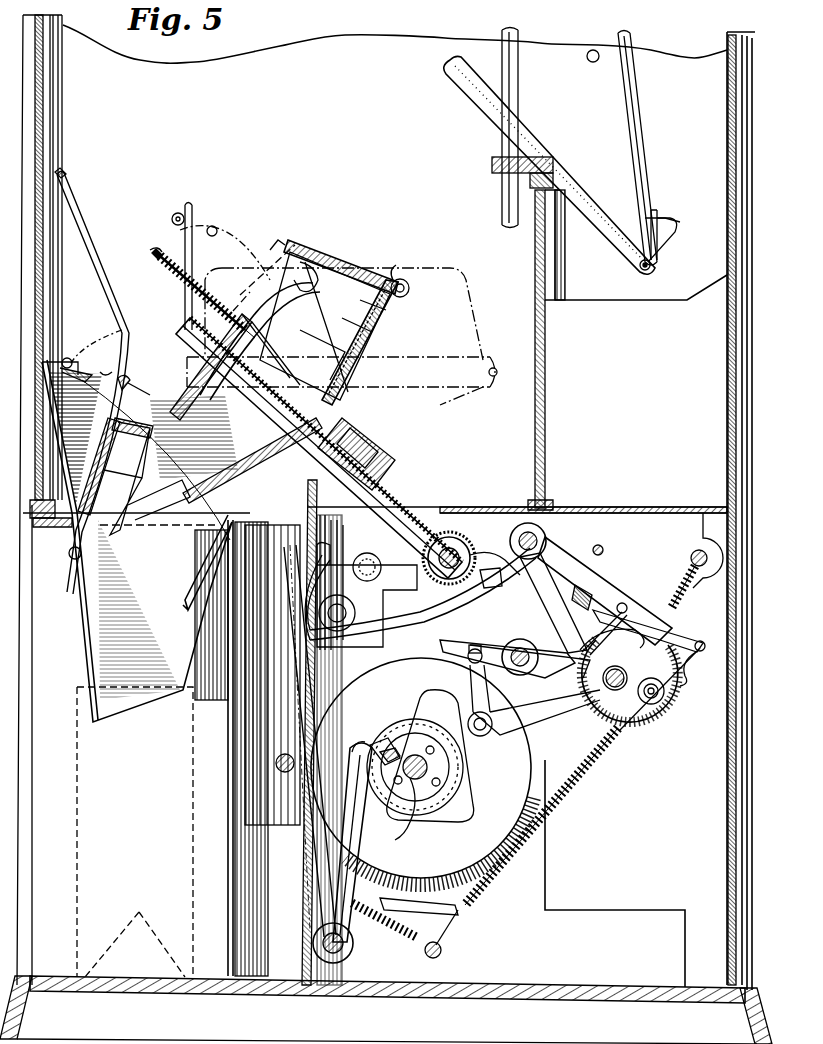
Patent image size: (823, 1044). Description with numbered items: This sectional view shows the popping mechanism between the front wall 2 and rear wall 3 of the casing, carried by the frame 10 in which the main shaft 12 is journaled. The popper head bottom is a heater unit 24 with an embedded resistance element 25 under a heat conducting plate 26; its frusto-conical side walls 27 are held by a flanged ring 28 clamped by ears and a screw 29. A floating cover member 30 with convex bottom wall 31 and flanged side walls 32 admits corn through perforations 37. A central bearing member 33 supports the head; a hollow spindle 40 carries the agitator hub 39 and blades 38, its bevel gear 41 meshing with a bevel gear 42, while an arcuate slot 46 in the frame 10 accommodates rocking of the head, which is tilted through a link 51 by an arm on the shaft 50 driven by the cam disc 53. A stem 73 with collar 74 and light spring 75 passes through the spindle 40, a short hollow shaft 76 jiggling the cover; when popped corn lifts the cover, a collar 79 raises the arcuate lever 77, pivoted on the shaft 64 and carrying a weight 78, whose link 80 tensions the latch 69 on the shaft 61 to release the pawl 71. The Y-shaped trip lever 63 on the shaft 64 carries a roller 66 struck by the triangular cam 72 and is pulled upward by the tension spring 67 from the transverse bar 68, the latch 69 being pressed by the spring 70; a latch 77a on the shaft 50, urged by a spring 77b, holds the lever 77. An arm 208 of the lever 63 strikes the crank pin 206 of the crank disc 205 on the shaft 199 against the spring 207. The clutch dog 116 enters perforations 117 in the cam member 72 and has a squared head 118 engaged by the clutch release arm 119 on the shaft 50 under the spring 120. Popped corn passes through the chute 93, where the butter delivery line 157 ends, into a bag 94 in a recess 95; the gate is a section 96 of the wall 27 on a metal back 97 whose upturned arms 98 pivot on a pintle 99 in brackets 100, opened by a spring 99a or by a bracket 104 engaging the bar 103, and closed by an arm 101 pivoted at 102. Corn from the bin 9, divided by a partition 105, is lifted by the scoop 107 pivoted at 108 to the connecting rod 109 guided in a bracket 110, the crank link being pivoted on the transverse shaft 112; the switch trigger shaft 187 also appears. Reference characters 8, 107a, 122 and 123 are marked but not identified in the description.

The front wall 2 is at (32, 647).
The rear wall 3 is at (740, 625).
The cylinder section 8 is at (307, 237).
The bin 9 is at (636, 204).
The frame 10 is at (300, 512).
The main shaft 12 is at (408, 809).
The heater unit 24 is at (380, 328).
The electrical resistance element 25 is at (372, 342).
The heat conducting plate 26 is at (355, 370).
The side walls 27 is at (322, 252).
The flanged ring 28 is at (410, 288).
The perforated ears and screw 29 is at (390, 272).
The floating cover member 30 is at (277, 250).
The convex bottom wall 31 is at (272, 312).
The flanged side walls 32 is at (258, 282).
The central bearing member 33 is at (380, 433).
The perforations 37 is at (312, 285).
The agitator blades 38 is at (345, 350).
The central hub 39 is at (300, 362).
The hollow spindle 40 is at (375, 458).
The bevel gear 41 is at (457, 534).
The bevel gear 42 is at (460, 550).
The arcuate slot 46 is at (367, 595).
The shaft 50 is at (312, 943).
The link 51 is at (380, 555).
The cam disc 53 is at (422, 771).
The shaft 61 is at (528, 648).
The trip lever 63 is at (533, 585).
The shaft 64 is at (545, 535).
The roller 66 is at (470, 715).
The tension spring 67 is at (575, 790).
The transverse bar 68 is at (440, 958).
The latch 69 is at (496, 650).
The spring 70 is at (595, 660).
The pawl 71 is at (468, 664).
The triangular cam 72 is at (428, 702).
The stem 73 is at (165, 283).
The collar 74 is at (160, 252).
The light spring 75 is at (172, 295).
The short hollow shaft 76 is at (248, 330).
The arcuate lever 77 is at (423, 615).
The latch 77a is at (302, 685).
The spring 77b is at (445, 915).
The weight 78 is at (606, 585).
The collar 79 is at (480, 574).
The link 80 is at (590, 613).
The chute 93 is at (76, 632).
The bag 94 is at (76, 773).
The recess 95 is at (136, 625).
The gate section 96 is at (108, 445).
The metal back 97 is at (140, 490).
The upturned arms 98 is at (128, 372).
The pintle 99 is at (218, 229).
The spring 99a is at (105, 370).
The brackets 100 is at (133, 382).
The arm 101 is at (80, 214).
The pivot 102 is at (70, 568).
The bar 103 is at (173, 215).
The bracket 104 is at (80, 365).
The partition 105 is at (652, 295).
The corn scoop 107 is at (570, 170).
The pin 107a is at (590, 62).
The pivot 108 is at (651, 265).
The connecting rod 109 is at (636, 72).
The bracket 110 is at (492, 165).
The transverse shaft 112 is at (280, 770).
The clutch dog 116 is at (395, 745).
The perforations 117 is at (453, 762).
The squared head 118 is at (380, 735).
The clutch release arm 119 is at (348, 843).
The spring 120 is at (372, 918).
The tab 122 is at (660, 214).
The block 123 is at (530, 182).
The delivery line 157 is at (202, 560).
The shaft 187 is at (601, 546).
The shaft 199 is at (628, 677).
The crank disc 205 is at (630, 681).
The crank pin 206 is at (660, 702).
The spring 207 is at (690, 605).
The arm 208 is at (684, 680).